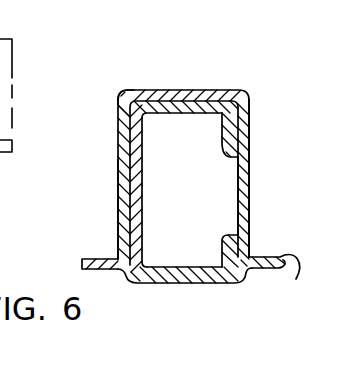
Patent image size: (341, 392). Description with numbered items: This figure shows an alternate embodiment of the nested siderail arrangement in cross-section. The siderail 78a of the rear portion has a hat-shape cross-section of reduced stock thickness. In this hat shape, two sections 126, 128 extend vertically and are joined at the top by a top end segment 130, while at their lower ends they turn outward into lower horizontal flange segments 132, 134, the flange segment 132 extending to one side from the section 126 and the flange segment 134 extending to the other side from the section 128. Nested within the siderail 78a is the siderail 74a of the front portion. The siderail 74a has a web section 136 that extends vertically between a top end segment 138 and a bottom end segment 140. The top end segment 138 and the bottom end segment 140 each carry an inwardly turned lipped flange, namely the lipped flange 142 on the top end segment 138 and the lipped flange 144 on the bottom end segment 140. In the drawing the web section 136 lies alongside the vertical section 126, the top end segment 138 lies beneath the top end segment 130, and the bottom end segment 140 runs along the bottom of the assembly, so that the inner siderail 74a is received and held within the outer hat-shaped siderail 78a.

The top end segment 130 is at (186, 90).
The siderail 78a is at (119, 88).
The top end segment 138 is at (188, 114).
The section 126 is at (119, 169).
The siderail 74a is at (152, 135).
The web section 136 is at (147, 198).
The bottom end segment 140 is at (167, 267).
The inwardly turned lipped flange 142 is at (232, 157).
The section 128 is at (249, 181).
The inwardly turned lipped flange 144 is at (242, 226).
The lower horizontal flange segment 132 is at (92, 258).
The lower horizontal flange segment 134 is at (275, 282).